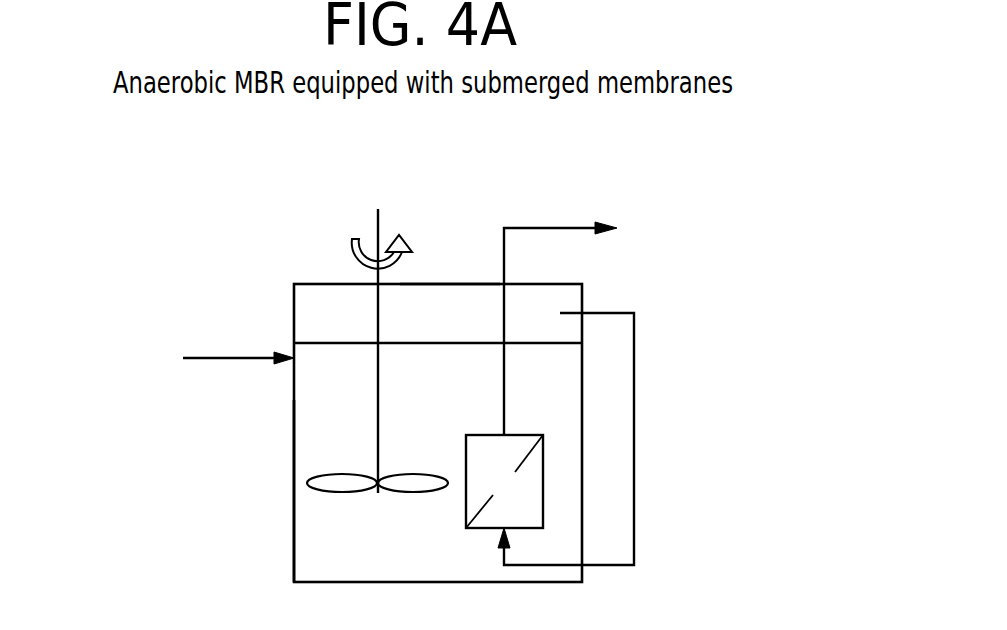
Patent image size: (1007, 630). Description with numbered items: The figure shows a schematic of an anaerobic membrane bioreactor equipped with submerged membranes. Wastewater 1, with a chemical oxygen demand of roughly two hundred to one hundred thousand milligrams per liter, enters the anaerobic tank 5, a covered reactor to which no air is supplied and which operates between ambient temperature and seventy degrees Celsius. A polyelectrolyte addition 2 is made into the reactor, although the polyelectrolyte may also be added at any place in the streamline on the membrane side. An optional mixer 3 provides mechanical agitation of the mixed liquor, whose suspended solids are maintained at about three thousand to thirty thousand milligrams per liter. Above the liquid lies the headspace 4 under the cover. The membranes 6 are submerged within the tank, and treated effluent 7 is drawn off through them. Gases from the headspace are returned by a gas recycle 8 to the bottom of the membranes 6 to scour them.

The wastewater 1 is at (222, 357).
The polyelectrolyte addition 2 is at (333, 314).
The mixer 3 is at (379, 228).
The headspace 4 is at (447, 297).
The anaerobic tank 5 is at (293, 473).
The membranes 6 is at (512, 495).
The effluent 7 is at (537, 227).
The gas recycle 8 is at (635, 478).